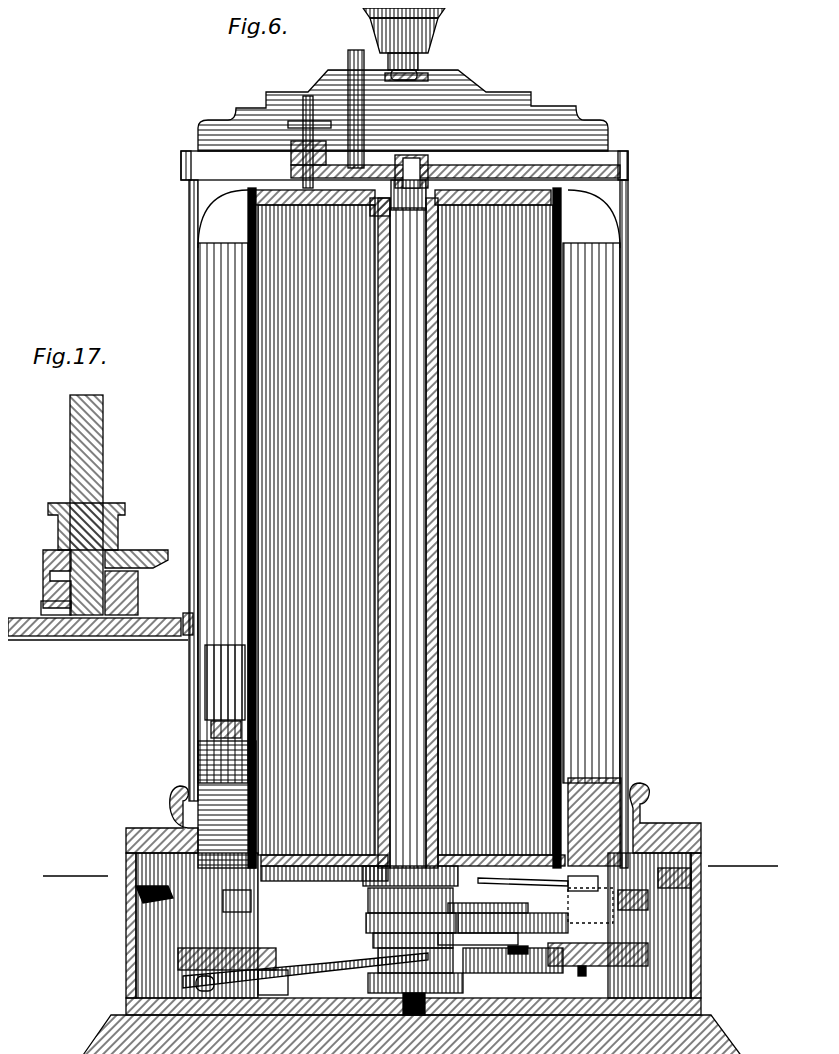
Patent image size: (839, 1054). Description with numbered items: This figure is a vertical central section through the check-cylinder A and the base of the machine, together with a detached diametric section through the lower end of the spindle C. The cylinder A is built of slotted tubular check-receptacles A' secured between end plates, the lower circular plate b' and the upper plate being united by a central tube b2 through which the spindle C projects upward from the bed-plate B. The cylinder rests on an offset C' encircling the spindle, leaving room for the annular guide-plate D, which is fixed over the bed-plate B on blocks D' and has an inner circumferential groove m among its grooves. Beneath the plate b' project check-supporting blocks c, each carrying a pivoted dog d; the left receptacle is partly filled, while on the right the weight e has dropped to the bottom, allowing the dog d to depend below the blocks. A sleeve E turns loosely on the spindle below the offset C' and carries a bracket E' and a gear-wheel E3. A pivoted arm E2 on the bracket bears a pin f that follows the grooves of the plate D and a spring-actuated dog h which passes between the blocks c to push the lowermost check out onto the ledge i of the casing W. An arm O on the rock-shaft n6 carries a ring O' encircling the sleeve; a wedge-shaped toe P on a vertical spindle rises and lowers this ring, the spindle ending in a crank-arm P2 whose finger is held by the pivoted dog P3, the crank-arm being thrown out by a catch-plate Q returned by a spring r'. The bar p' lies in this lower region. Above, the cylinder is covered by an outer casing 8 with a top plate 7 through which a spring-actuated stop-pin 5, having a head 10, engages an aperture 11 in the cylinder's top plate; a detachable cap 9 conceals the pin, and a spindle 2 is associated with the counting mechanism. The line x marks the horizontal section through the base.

In FIG. 6, the spindle 2 is at (430, 195).
In FIG. 6, the spring-actuated stop-pin 5 is at (298, 100).
In FIG. 6, the top plate 7 is at (600, 152).
In FIG. 6, the outer casing 8 is at (182, 522).
In FIG. 6, the detachable cap 9 is at (505, 87).
In FIG. 6, the head 10 is at (298, 113).
In FIG. 6, the aperture 11 is at (497, 197).
In FIG. 6, the check-cylinder A is at (405, 530).
In FIG. 6, the tubular check-receptacle A' is at (409, 528).
In FIG. 6, the bed-plate B is at (439, 1020).
In FIG. 17, the bed-plate B is at (98, 636).
In FIG. 6, the spindle C is at (408, 533).
In FIG. 17, the spindle C is at (95, 505).
In FIG. 6, the offset C' is at (410, 869).
In FIG. 17, the offset C' is at (99, 525).
In FIG. 6, the annular guide-plate D is at (379, 957).
In FIG. 6, the block D' is at (258, 972).
In FIG. 6, the sleeve E is at (487, 960).
In FIG. 17, the sleeve E is at (90, 582).
In FIG. 6, the bracket E' is at (403, 924).
In FIG. 17, the bracket E' is at (142, 566).
In FIG. 6, the pivoted arm E2 is at (513, 923).
In FIG. 6, the gear-wheel E3 is at (456, 977).
In FIG. 17, the gear-wheel E3 is at (48, 607).
In FIG. 6, the arm O is at (273, 1002).
In FIG. 6, the annular ring O' is at (452, 943).
In FIG. 6, the wedge-shaped toe P is at (125, 880).
In FIG. 6, the crank-arm P2 is at (410, 902).
In FIG. 6, the pivoted dog P3 is at (411, 929).
In FIG. 6, the catch-plate Q is at (590, 912).
In FIG. 6, the casing W is at (411, 899).
In FIG. 6, the lower circular plate b' is at (413, 861).
In FIG. 6, the central tube b2 is at (430, 452).
In FIG. 6, the check-supporting block c is at (410, 894).
In FIG. 6, the dog d is at (235, 905).
In FIG. 6, the weight e is at (409, 756).
In FIG. 6, the pin f is at (586, 979).
In FIG. 6, the dog h is at (523, 884).
In FIG. 6, the ledge i is at (683, 870).
In FIG. 6, the inner circumferential groove m is at (539, 955).
In FIG. 6, the rock-shaft n6 is at (192, 985).
In FIG. 6, the bar p' is at (478, 936).
In FIG. 6, the spring r' is at (488, 907).
In FIG. 6, the section line x is at (407, 872).